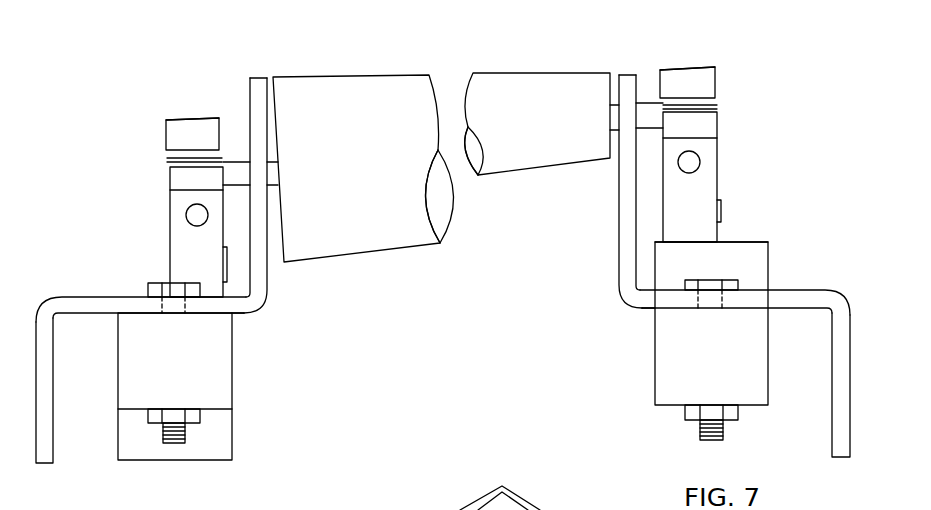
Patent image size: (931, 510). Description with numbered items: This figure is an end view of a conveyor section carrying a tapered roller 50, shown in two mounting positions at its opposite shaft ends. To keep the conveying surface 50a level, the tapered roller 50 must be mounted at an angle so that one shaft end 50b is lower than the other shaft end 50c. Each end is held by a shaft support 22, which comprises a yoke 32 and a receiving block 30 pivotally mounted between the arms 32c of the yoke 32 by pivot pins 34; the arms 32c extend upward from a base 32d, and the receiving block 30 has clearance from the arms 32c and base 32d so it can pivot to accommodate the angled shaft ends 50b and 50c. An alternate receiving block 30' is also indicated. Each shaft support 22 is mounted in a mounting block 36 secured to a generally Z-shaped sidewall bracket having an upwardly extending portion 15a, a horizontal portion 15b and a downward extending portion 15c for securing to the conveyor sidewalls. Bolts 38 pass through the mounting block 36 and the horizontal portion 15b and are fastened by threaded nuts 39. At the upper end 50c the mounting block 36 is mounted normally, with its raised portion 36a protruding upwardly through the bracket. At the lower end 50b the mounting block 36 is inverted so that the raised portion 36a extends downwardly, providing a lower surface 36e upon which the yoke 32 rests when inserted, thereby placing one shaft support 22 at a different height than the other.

The upwardly extending portion 15a is at (263, 267).
The horizontal portion 15b is at (101, 303).
The downward extending portion 15c is at (42, 465).
The shaft support 22 is at (152, 112).
The receiving block 30 is at (444, 114).
The alternate latch head 30' is at (453, 494).
The yoke 32 is at (182, 248).
The arms 32c is at (175, 207).
The base 32d is at (707, 225).
The pivot pins 34 is at (193, 217).
The mounting block 36 is at (222, 368).
The raised portion 36a is at (200, 455).
The lower surface 36e is at (233, 313).
The bolt 38 is at (155, 285).
The nut 39 is at (202, 420).
The tapered roller 50 is at (388, 238).
The conveying surface 50a is at (343, 74).
The shaft end 50b is at (237, 167).
The shaft end 50c is at (650, 107).